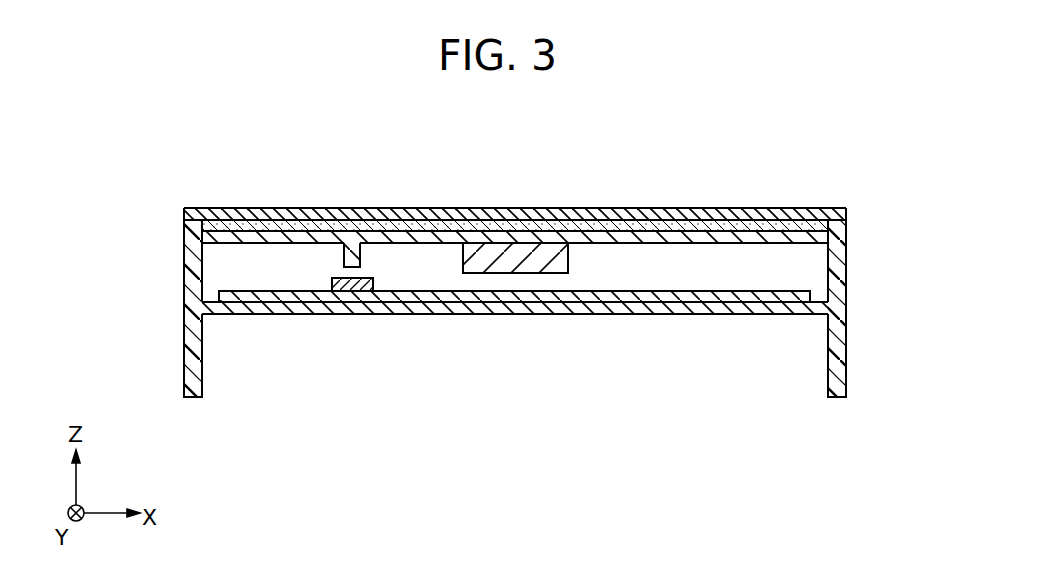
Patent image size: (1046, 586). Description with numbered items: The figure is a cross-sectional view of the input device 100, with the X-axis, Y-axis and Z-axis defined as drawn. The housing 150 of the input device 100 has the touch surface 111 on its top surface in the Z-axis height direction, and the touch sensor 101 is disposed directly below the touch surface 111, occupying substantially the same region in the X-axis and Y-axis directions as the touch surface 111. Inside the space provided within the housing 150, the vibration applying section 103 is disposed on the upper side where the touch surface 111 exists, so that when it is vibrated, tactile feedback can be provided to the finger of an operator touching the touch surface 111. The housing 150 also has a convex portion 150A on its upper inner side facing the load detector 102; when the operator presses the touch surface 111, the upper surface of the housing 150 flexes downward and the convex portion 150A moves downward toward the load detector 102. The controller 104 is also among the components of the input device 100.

The input device 100 is at (230, 138).
The touch sensor 101 is at (653, 227).
The load detector 102 is at (348, 292).
The vibration applying section 103 is at (517, 260).
The controller 104 is at (753, 303).
The touch surface 111 is at (748, 211).
The housing 150 is at (847, 277).
The convex portion 150A is at (346, 261).